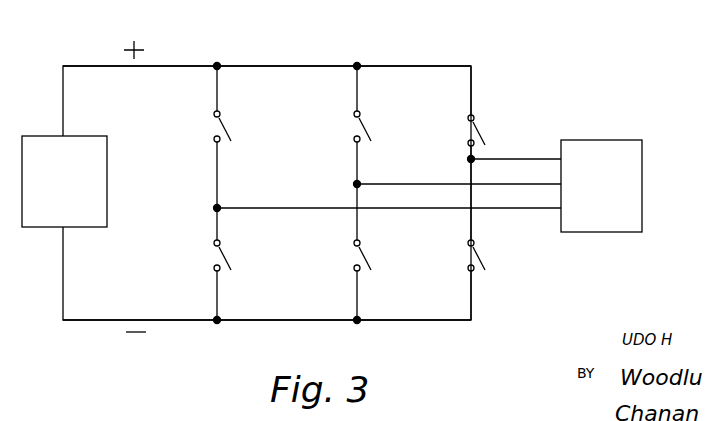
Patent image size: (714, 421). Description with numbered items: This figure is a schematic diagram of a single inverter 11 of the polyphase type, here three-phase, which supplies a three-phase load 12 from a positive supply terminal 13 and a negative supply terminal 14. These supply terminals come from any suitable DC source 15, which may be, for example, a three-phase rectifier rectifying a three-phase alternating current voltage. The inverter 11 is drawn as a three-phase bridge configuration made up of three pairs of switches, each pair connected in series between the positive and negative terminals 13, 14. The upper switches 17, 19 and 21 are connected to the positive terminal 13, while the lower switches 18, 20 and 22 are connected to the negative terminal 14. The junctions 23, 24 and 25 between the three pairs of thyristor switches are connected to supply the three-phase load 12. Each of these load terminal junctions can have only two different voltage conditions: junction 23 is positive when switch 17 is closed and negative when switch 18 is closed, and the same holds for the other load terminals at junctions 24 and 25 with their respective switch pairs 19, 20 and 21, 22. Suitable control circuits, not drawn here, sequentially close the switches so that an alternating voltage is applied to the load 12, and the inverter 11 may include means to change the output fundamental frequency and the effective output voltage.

The inverter 11 is at (560, 104).
The three-phase load 12 is at (643, 157).
The positive supply terminal 13 is at (297, 66).
The negative supply terminal 14 is at (282, 320).
The DC source 15 is at (107, 136).
The switch 17 is at (228, 129).
The switch 18 is at (229, 254).
The switch 19 is at (368, 129).
The switch 20 is at (368, 254).
The switch 21 is at (480, 130).
The switch 22 is at (481, 254).
The junction 23 is at (219, 206).
The junction 24 is at (359, 182).
The junction 25 is at (476, 157).